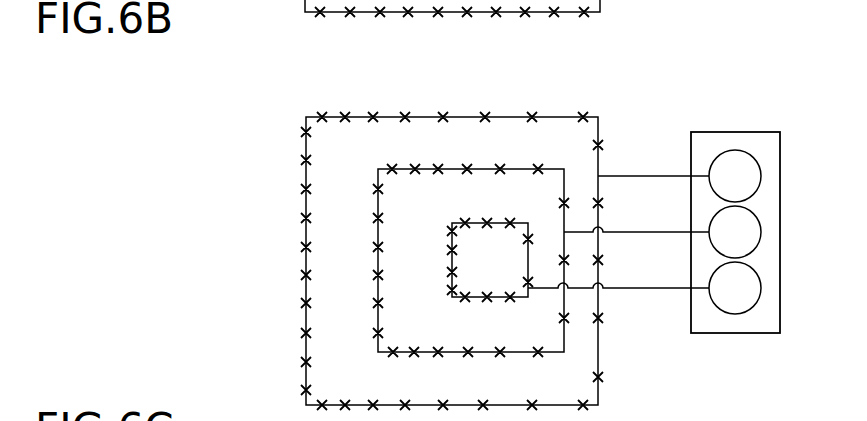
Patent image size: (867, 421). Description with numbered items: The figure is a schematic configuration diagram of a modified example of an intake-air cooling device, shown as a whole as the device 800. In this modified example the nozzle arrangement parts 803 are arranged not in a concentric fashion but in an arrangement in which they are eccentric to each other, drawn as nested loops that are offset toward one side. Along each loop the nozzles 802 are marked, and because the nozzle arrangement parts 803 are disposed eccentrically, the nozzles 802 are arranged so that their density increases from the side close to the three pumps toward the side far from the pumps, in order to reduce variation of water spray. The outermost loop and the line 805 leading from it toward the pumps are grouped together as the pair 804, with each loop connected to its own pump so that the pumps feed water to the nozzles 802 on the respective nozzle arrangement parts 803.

The antenna device 800 is at (729, 85).
The nozzle 802 is at (306, 130).
The nozzle arrangement part 803 is at (603, 158).
The conductor pair 804 is at (723, 93).
The connection wire 805 is at (667, 176).